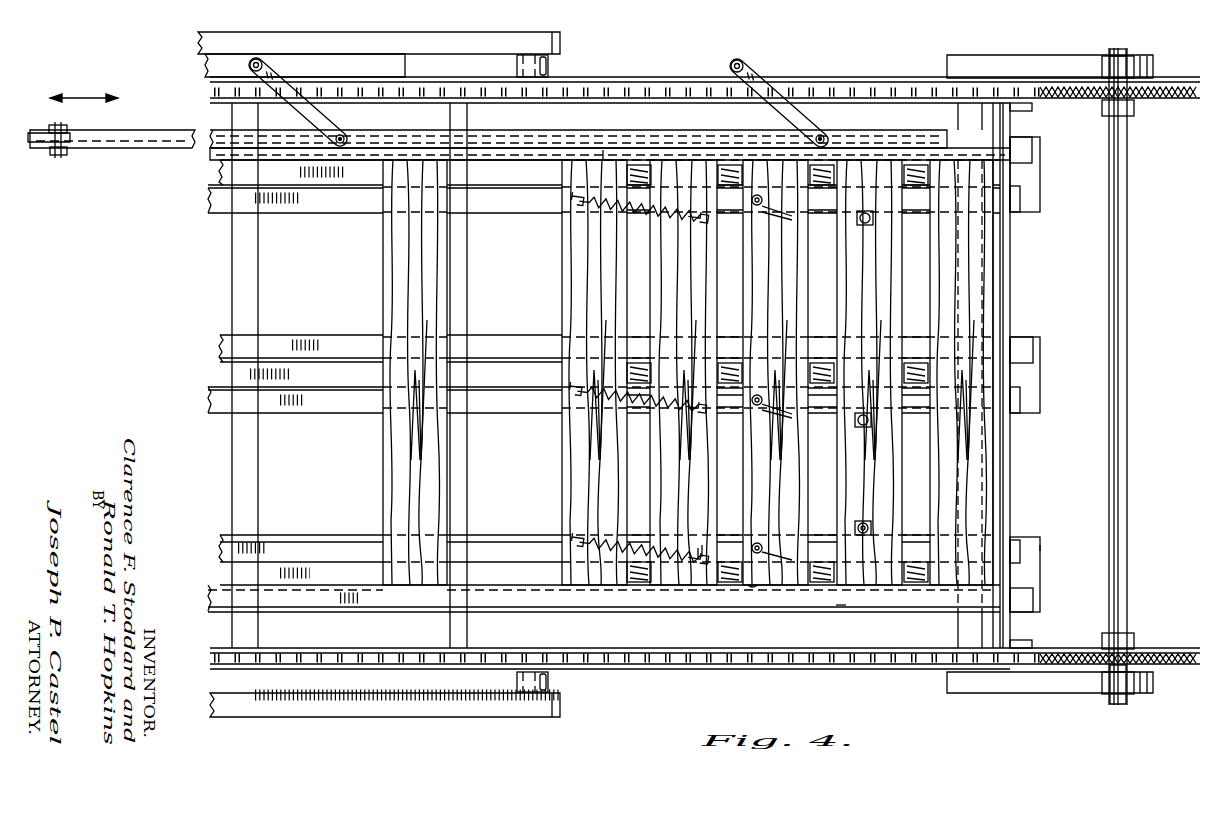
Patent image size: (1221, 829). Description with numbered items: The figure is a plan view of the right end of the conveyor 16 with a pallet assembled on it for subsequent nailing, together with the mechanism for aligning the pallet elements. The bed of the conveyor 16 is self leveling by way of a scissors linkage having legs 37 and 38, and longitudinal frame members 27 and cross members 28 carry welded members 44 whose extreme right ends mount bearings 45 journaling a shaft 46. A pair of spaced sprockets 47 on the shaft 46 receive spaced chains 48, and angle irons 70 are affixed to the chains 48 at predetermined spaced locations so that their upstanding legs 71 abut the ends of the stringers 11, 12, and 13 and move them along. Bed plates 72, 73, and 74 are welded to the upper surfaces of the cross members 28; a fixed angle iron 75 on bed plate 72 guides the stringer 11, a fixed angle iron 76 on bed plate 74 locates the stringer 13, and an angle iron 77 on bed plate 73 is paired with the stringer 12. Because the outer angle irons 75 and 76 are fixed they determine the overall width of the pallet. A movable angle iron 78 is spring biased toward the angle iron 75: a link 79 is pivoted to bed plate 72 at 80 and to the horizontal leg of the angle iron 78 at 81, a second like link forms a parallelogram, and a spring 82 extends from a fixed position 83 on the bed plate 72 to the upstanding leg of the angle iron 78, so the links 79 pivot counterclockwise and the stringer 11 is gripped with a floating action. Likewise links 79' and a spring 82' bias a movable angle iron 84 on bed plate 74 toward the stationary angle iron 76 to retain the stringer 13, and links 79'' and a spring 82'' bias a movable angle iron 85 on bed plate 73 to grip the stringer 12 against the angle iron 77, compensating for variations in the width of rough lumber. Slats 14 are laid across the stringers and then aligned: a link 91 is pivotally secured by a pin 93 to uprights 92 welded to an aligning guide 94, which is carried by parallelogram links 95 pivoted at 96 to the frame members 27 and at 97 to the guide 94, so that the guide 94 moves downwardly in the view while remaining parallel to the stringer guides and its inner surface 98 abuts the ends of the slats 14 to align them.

The stringer 11 is at (380, 545).
The stringer 12 is at (380, 337).
The stringer 13 is at (635, 168).
The slats 14 is at (570, 280).
The conveyor 16 is at (1042, 548).
The frame member 27 is at (1032, 107).
The cross members 28 is at (258, 450).
The leg 37 is at (453, 42).
The leg 38 is at (402, 62).
The members 44 is at (560, 44).
The bearings 45 is at (1134, 60).
The shaft 46 is at (1122, 446).
The sprockets 47 is at (1146, 104).
The chains 48 is at (870, 90).
The angle irons 70 is at (460, 250).
The upstanding legs 71 is at (1000, 458).
The bed plate 72 is at (1040, 575).
The bed plate 73 is at (1040, 370).
The bed plate 74 is at (1040, 172).
The angle iron 75 is at (840, 605).
The angle iron 76 is at (1030, 150).
The angle iron 77 is at (1030, 348).
The angle iron 78 is at (1015, 540).
The link 79 is at (773, 525).
The links 79' is at (776, 222).
The links 79'' is at (776, 425).
The pivot 80 is at (865, 525).
The pivot 81 is at (756, 587).
The spring 82 is at (640, 527).
The spring 82' is at (640, 226).
The spring 82'' is at (638, 415).
The fixed position 83 is at (705, 535).
The movable angle iron 84 is at (1018, 200).
The movable angle iron 85 is at (1018, 398).
The link 91 is at (35, 142).
The uprights 92 is at (62, 130).
The pin 93 is at (58, 159).
The aligning guide 94 is at (208, 148).
The links 95 is at (300, 106).
The pivot 96 is at (258, 58).
The pivot 97 is at (342, 138).
The inner surface 98 is at (606, 152).